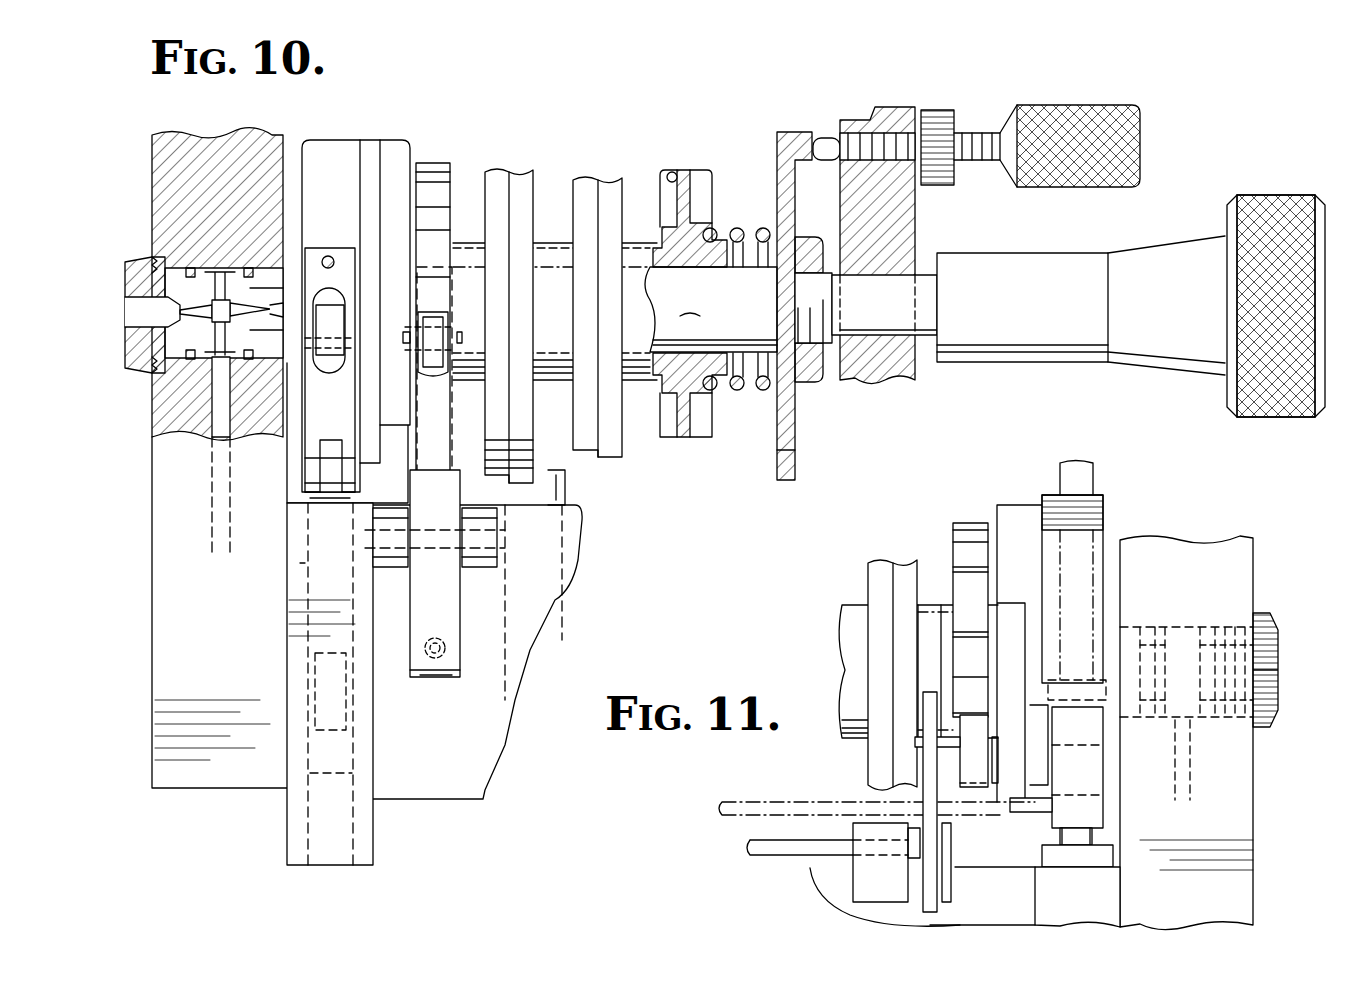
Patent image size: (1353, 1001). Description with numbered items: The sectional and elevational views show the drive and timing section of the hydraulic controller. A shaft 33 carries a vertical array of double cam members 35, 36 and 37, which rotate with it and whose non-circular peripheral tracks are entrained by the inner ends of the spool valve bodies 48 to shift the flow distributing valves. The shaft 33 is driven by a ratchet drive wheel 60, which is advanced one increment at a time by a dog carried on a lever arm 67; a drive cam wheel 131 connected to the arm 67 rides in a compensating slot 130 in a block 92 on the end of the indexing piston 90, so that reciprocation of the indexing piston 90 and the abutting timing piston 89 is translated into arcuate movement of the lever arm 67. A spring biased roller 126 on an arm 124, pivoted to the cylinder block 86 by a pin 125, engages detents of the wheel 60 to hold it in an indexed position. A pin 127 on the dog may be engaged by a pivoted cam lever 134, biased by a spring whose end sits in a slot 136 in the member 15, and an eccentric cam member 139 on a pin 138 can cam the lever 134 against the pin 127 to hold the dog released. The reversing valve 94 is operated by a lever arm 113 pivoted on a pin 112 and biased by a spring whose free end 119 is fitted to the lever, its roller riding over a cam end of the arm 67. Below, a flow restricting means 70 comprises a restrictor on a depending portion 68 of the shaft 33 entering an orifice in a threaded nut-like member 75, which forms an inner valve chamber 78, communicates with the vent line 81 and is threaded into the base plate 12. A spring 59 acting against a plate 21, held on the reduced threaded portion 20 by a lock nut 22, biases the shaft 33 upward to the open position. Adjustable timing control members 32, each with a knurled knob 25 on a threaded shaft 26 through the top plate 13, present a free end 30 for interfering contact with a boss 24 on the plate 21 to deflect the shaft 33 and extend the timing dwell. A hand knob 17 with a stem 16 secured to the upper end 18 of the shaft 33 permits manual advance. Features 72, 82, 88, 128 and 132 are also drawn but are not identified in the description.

In FIG. 10, the base plate 12 is at (152, 160).
In FIG. 11, the base plate 12 is at (1240, 570).
In FIG. 10, the top plate 13 is at (905, 218).
In FIG. 10, the member 15 is at (580, 520).
In FIG. 10, the stem portion 16 is at (1081, 305).
In FIG. 10, the hand operated knob 17 is at (1262, 208).
In FIG. 10, the upper end of shaft 18 is at (884, 305).
In FIG. 10, the upper reduced threaded portion 20 is at (822, 285).
In FIG. 10, the plate 21 is at (795, 440).
In FIG. 10, the lock nut 22 is at (812, 384).
In FIG. 10, the cam or boss 24 is at (793, 135).
In FIG. 10, the knurled knob 25 is at (1130, 130).
In FIG. 10, the threaded shaft 26 is at (885, 125).
In FIG. 10, the free end 30 is at (825, 138).
In FIG. 10, the adjustable timing control member 32 is at (1008, 100).
In FIG. 10, the shaft 33 is at (615, 311).
In FIG. 11, the shaft 33 is at (842, 645).
In FIG. 10, the double cam member 35 is at (670, 172).
In FIG. 10, the double cam member 36 is at (600, 180).
In FIG. 10, the double cam member 37 is at (521, 175).
In FIG. 11, the double cam member 37 is at (870, 582).
In FIG. 10, the spool valve body 48 is at (567, 481).
In FIG. 10, the spring 59 is at (740, 228).
In FIG. 10, the drive wheel 60 is at (440, 168).
In FIG. 11, the drive wheel 60 is at (955, 555).
In FIG. 10, the lever arm 67 is at (348, 145).
In FIG. 11, the lever arm 67 is at (1105, 512).
In FIG. 10, the depending portion 68 is at (445, 645).
In FIG. 10, the flow restricting means 70 is at (255, 296).
In FIG. 10, the stem 72 is at (202, 272).
In FIG. 10, the threaded nut-like member 75 is at (125, 342).
In FIG. 11, the threaded nut-like member 75 is at (1278, 708).
In FIG. 10, the inner valve chamber 78 is at (212, 306).
In FIG. 10, the vent line 81 is at (212, 395).
In FIG. 10, the seal 82 is at (250, 362).
In FIG. 10, the cylinder block 86 is at (289, 832).
In FIG. 11, the base block 88 is at (1097, 858).
In FIG. 11, the timing ram or piston 89 is at (1095, 480).
In FIG. 11, the indexing ram or piston 90 is at (1095, 835).
In FIG. 11, the block member 92 is at (1095, 802).
In FIG. 10, the reversing valve 94 is at (302, 557).
In FIG. 10, the pin 112 is at (302, 474).
In FIG. 10, the lever arm 113 is at (313, 432).
In FIG. 10, the free end of spring 119 is at (326, 256).
In FIG. 10, the arm 124 is at (450, 592).
In FIG. 10, the pin 125 is at (497, 537).
In FIG. 10, the detent or roller member 126 is at (433, 358).
In FIG. 11, the detent or roller member 126 is at (978, 775).
In FIG. 11, the pin 127 is at (915, 742).
In FIG. 10, the arm end 128 is at (436, 660).
In FIG. 10, the slot 130 is at (320, 365).
In FIG. 10, the drive cam wheel 131 is at (332, 305).
In FIG. 11, the drive cam wheel 131 is at (1105, 775).
In FIG. 11, the rod 132 is at (765, 805).
In FIG. 11, the cam lever 134 is at (925, 905).
In FIG. 11, the slot 136 is at (862, 880).
In FIG. 11, the pin 138 is at (770, 850).
In FIG. 11, the cam member 139 is at (952, 888).